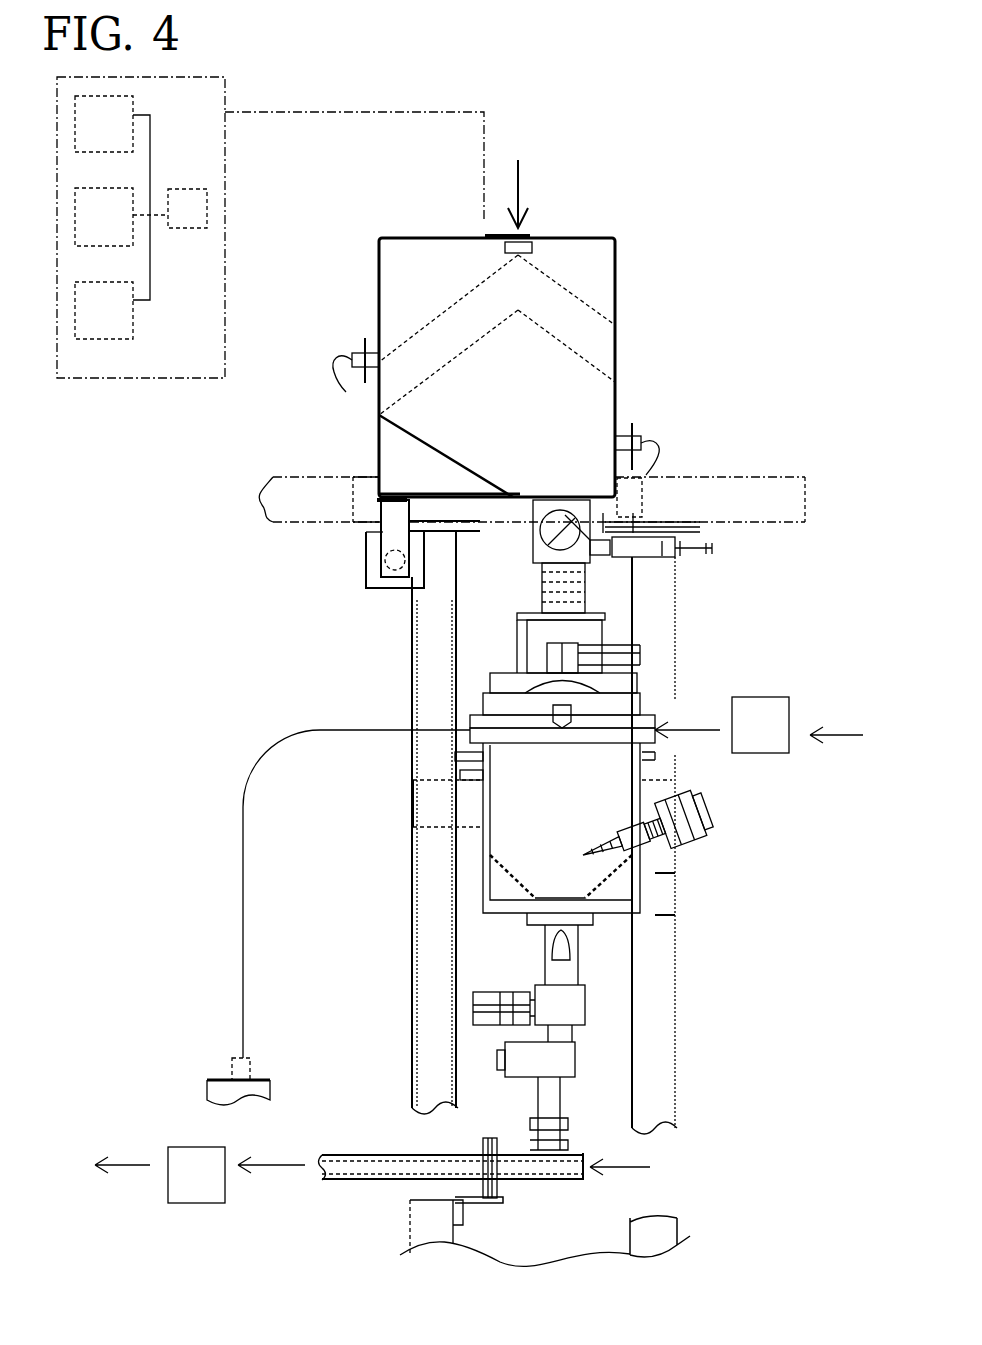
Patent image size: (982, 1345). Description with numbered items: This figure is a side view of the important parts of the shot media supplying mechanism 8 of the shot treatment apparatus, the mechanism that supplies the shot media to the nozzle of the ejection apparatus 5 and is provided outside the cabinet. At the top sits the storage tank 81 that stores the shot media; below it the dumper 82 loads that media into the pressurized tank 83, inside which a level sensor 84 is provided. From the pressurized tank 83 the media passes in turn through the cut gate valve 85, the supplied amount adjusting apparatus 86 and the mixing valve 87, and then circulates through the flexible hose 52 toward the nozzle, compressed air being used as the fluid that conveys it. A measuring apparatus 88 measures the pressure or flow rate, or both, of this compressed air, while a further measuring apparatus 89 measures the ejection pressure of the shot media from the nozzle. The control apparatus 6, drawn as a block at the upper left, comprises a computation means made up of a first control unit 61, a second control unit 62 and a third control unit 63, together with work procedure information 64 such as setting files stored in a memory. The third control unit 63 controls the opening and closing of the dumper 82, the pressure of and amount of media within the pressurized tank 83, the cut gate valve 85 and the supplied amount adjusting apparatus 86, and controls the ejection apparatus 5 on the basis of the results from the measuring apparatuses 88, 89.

The ejection apparatus 5 is at (733, 169).
The control apparatus 6 is at (225, 178).
The first control unit 61 is at (104, 124).
The second control unit 62 is at (104, 217).
The third control unit 63 is at (104, 310).
The work procedure information 64 is at (187, 208).
The shot media supplying mechanism 8 is at (677, 622).
The storage tank 81 is at (422, 272).
The dumper 82 is at (563, 532).
The pressurized tank 83 is at (550, 805).
The level sensor 84 is at (640, 835).
The cut gate valve 85 is at (577, 1000).
The supplied amount adjusting apparatus 86 is at (537, 1052).
The mixing valve 87 is at (583, 1157).
The measuring apparatus 88 is at (770, 715).
The measuring apparatus 89 is at (195, 1175).
The flexible hose 52 is at (365, 1168).